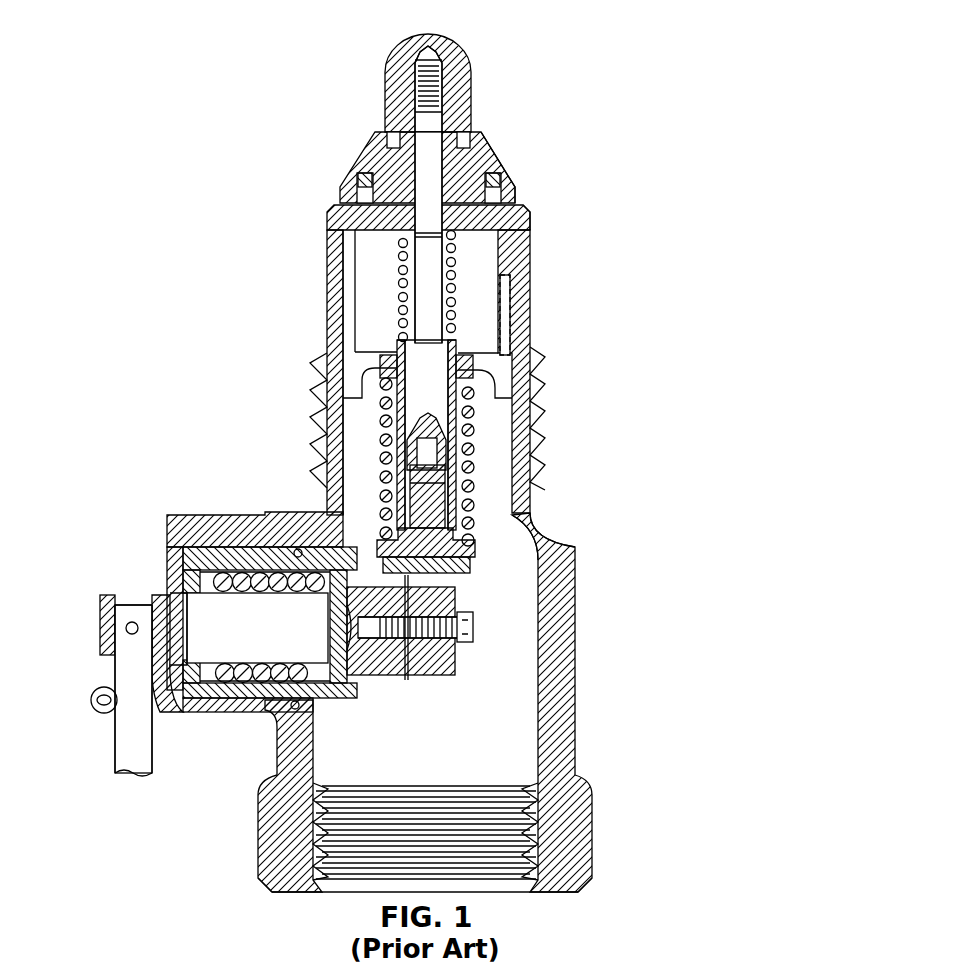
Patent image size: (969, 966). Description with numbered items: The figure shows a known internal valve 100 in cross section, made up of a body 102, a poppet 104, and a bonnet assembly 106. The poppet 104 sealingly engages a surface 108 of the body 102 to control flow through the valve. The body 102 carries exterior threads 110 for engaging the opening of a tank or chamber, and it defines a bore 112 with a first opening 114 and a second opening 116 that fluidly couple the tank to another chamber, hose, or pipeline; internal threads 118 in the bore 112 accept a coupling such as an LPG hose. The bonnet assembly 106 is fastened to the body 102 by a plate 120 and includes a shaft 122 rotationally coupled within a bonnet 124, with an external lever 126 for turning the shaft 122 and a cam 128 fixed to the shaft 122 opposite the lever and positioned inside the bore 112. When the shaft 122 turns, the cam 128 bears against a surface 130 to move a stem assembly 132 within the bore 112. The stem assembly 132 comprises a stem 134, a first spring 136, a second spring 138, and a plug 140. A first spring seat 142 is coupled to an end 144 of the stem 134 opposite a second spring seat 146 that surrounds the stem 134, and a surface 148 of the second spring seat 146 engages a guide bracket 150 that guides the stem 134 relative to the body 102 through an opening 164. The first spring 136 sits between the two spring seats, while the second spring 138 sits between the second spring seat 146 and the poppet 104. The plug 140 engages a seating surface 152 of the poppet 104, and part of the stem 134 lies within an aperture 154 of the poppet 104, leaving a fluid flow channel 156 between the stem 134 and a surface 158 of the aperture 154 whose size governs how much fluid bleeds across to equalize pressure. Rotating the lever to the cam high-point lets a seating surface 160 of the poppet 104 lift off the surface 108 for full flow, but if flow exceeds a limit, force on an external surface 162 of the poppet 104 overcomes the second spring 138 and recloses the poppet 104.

The internal valve 100 is at (157, 48).
The body 102 is at (457, 724).
The poppet 104 is at (433, 144).
The bonnet assembly 106 is at (202, 613).
The surface of the body 108 is at (410, 345).
The exterior threads 110 is at (315, 402).
The bore 112 is at (505, 653).
The first opening 114 is at (367, 228).
The second opening 116 is at (550, 890).
The internal threads 118 is at (530, 812).
The plate 120 is at (219, 630).
The shaft 122 is at (222, 617).
The bonnet 124 is at (213, 702).
The external lever 126 is at (125, 748).
The cam 128 is at (430, 687).
The surface 130 is at (465, 583).
The stem assembly 132 is at (378, 450).
The stem 134 is at (430, 275).
The first spring 136 is at (472, 428).
The second spring 138 is at (400, 298).
The plug 140 is at (452, 58).
The first spring seat 142 is at (550, 532).
The end of the stem 144 is at (478, 530).
The second spring seat 146 is at (399, 342).
The surface of the second spring seat 148 is at (472, 353).
The guide bracket 150 is at (508, 380).
The seating surface 152 is at (458, 140).
The aperture 154 is at (428, 178).
The fluid flow channel 156 is at (490, 172).
The surface of the aperture 158 is at (360, 178).
The seating surface of the poppet 160 is at (525, 212).
The external surface of the poppet 162 is at (508, 183).
The opening of the guide bracket 164 is at (392, 367).